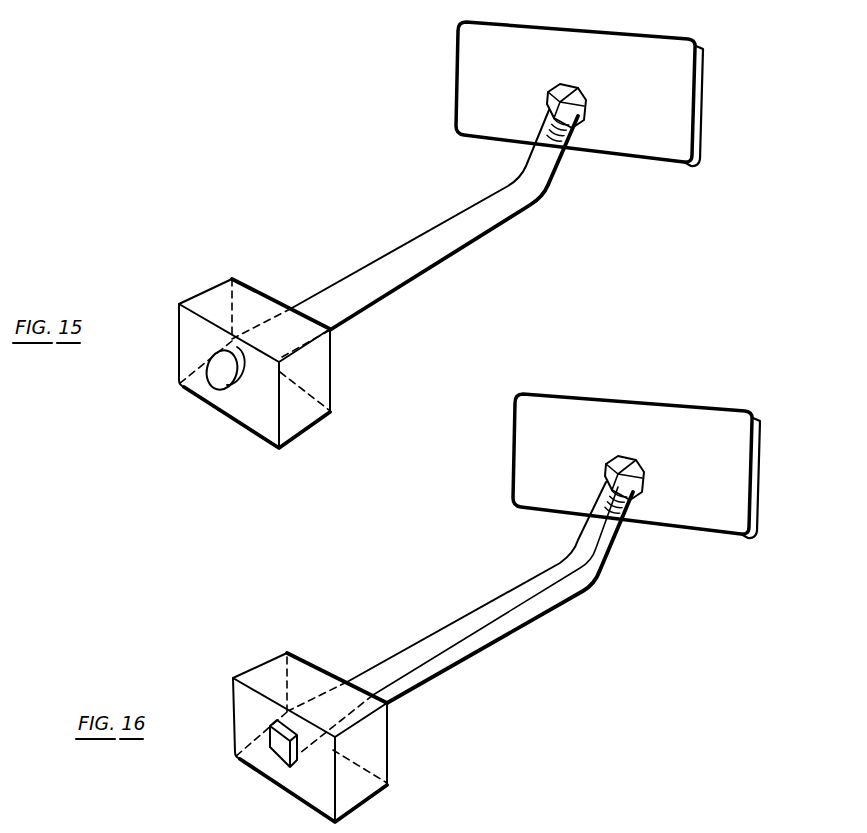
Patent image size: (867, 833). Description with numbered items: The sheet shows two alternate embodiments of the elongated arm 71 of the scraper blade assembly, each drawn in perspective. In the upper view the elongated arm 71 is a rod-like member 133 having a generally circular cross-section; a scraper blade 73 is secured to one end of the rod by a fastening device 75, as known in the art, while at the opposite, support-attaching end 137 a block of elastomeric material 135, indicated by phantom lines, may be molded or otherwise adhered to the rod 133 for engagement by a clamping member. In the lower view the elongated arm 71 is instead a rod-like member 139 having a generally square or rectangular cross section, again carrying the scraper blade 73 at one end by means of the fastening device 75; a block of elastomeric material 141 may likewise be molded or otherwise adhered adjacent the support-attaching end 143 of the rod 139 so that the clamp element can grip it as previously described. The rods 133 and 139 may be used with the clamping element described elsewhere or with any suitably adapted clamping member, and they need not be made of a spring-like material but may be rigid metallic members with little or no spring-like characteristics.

In FIG. 15, the elongated arm 71 is at (435, 220).
In FIG. 15, the scraper blade 73 is at (670, 84).
In FIG. 16, the scraper blade 73 is at (727, 457).
In FIG. 15, the fastening device 75 is at (563, 84).
In FIG. 16, the fastening device 75 is at (622, 455).
In FIG. 15, the rod-like member 133 is at (418, 272).
In FIG. 15, the block of elastomeric material 135 is at (205, 298).
In FIG. 15, the support-attaching end 137 is at (219, 374).
In FIG. 16, the rod-like member 139 is at (470, 657).
In FIG. 16, the block of elastomeric material 141 is at (260, 670).
In FIG. 16, the support-attaching end 143 is at (277, 748).